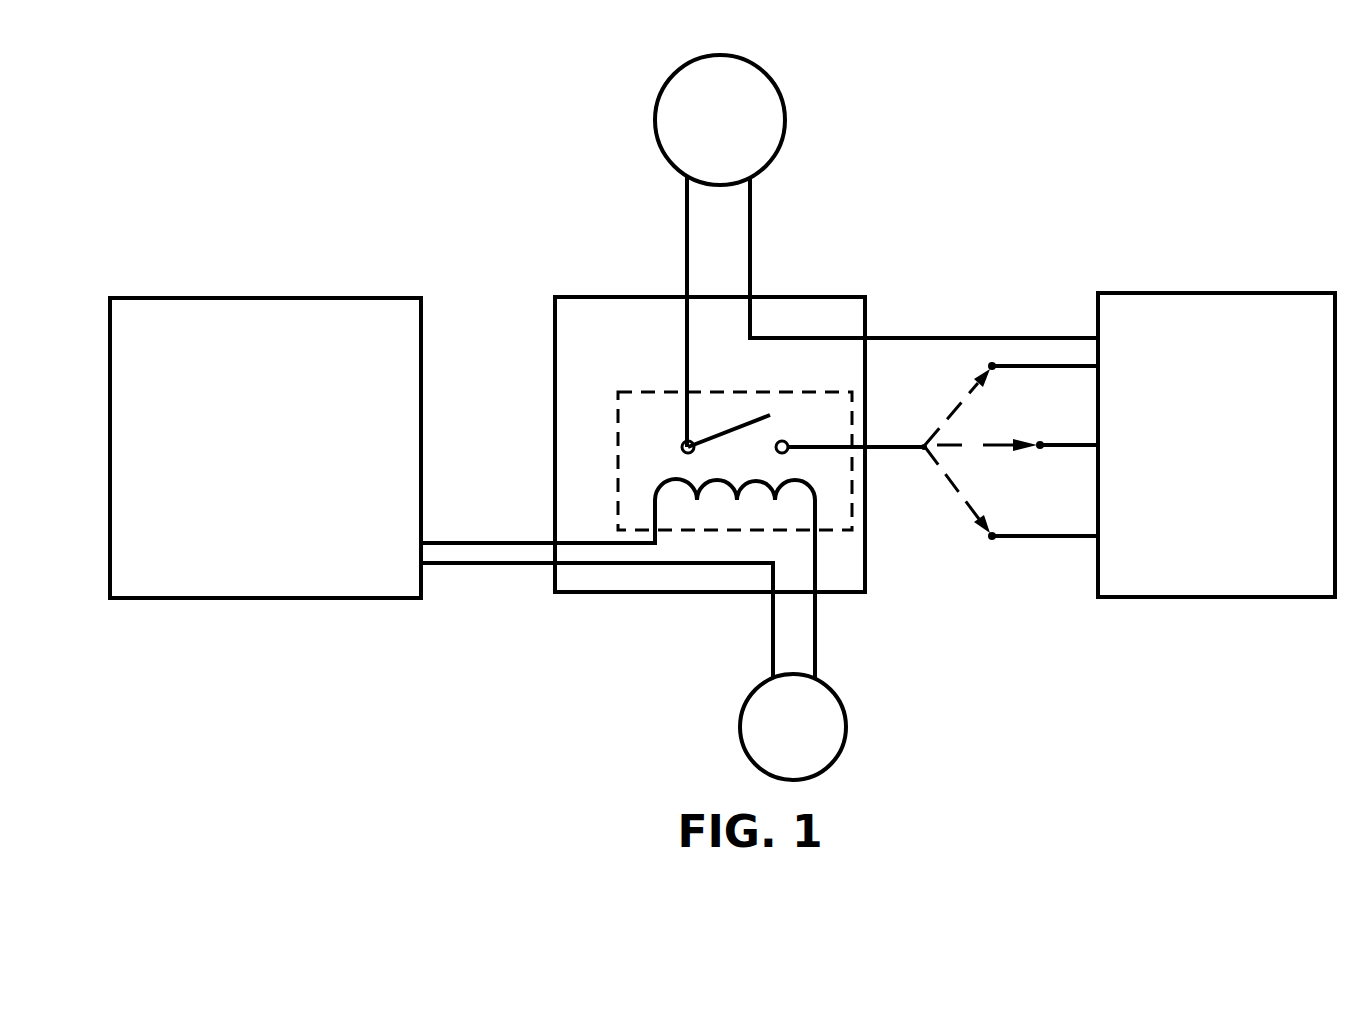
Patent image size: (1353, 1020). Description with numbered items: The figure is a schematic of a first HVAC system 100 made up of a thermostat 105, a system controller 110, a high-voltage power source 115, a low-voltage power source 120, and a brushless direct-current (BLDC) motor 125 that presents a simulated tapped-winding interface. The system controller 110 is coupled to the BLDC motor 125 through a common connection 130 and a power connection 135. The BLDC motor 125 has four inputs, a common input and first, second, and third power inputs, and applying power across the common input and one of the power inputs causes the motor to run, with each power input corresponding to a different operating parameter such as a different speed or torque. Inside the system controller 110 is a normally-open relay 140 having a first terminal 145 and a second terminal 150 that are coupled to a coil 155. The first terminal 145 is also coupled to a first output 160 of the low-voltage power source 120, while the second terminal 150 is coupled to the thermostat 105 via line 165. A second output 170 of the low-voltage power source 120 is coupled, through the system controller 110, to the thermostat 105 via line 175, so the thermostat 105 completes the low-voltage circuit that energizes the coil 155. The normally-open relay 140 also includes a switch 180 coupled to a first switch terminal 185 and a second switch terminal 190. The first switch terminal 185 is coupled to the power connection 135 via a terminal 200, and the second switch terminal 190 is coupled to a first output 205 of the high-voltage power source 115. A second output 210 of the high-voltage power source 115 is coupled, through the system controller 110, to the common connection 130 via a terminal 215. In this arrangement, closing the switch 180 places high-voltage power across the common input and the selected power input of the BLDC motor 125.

The first HVAC system 100 is at (148, 162).
The thermostat 105 is at (335, 297).
The system controller 110 is at (552, 328).
The high-voltage power source 115 is at (785, 98).
The low-voltage power source 120 is at (743, 752).
The brushless direct-current (BLDC) motor 125 is at (1230, 292).
The common connection 130 is at (990, 335).
The power connection 135 is at (892, 449).
The normally-open relay 140 is at (614, 430).
The first terminal 145 is at (817, 542).
The second terminal 150 is at (653, 528).
The coil 155 is at (737, 503).
The first output 160 is at (818, 677).
The line 165 is at (463, 540).
The second output 170 is at (770, 675).
The line 175 is at (495, 565).
The switch 180 is at (745, 420).
The first switch terminal 185 is at (864, 430).
The second switch terminal 190 is at (683, 388).
The terminal 200 is at (867, 452).
The first output 205 is at (683, 175).
The second output 210 is at (753, 175).
The terminal 215 is at (868, 335).